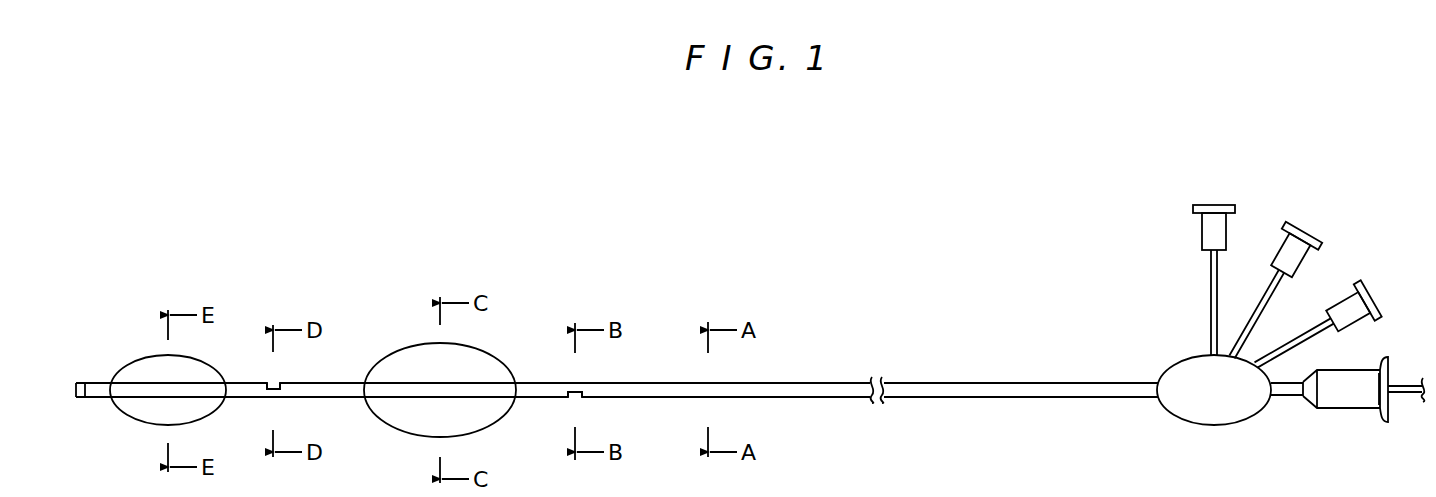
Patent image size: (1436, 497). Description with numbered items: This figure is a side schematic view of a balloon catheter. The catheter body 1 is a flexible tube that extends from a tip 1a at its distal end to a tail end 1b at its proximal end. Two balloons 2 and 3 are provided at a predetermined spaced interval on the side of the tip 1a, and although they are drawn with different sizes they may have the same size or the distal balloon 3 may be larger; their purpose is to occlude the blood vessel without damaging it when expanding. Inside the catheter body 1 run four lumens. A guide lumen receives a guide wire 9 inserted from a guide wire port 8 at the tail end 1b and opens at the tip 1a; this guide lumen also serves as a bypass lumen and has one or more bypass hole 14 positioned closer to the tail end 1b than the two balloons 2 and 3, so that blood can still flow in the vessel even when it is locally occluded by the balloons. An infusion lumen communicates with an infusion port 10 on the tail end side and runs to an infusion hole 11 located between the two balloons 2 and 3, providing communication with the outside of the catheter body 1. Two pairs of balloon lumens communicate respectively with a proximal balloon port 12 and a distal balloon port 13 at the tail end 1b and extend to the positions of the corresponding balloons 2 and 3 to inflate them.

The catheter body 1 is at (1002, 382).
The tip 1a is at (101, 381).
The tail end 1b is at (1283, 398).
The balloon 2 is at (131, 415).
The balloon 3 is at (401, 348).
The guide wire port 8 is at (1341, 410).
The guide wire 9 is at (1402, 394).
The infusion port 10 is at (1345, 296).
The infusion hole 11 is at (272, 383).
The proximal balloon port 12 is at (1281, 248).
The distal balloon port 13 is at (1203, 236).
The bypass hole 14 is at (569, 400).